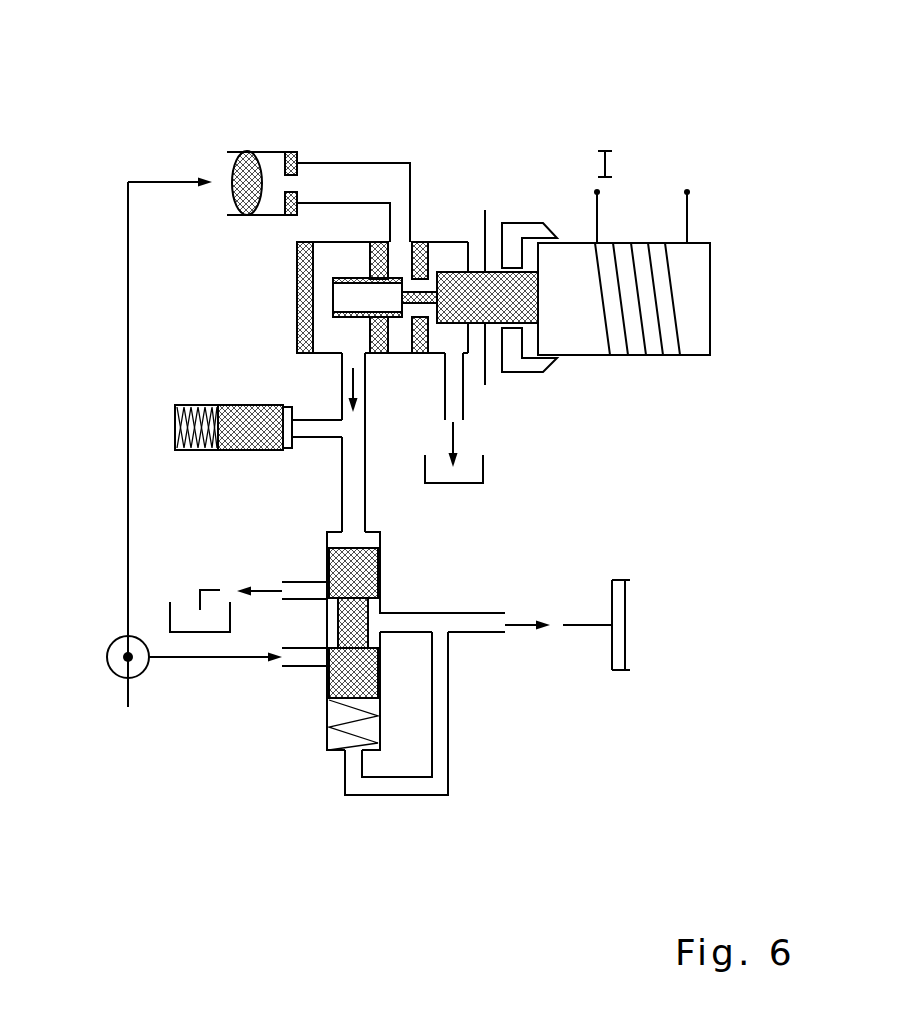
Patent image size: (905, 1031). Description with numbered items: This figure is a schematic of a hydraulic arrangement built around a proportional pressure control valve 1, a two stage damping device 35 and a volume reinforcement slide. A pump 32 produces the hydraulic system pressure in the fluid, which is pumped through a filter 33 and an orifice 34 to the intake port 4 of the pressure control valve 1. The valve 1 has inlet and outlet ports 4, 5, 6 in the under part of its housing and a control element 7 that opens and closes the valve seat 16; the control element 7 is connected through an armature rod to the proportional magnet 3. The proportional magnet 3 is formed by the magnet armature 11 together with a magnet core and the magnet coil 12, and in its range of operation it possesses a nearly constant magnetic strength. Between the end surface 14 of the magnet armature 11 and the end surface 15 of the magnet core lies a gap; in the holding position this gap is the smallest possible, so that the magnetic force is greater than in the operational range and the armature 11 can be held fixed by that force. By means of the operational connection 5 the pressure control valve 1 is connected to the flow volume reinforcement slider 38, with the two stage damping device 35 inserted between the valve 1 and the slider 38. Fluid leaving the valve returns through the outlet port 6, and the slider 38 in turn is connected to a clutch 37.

The pressure control valve 1 is at (552, 188).
The proportional magnet 3 is at (600, 370).
The intake port 4 is at (402, 237).
The operational connection 5 is at (340, 402).
The outlet port 6 is at (463, 387).
The control element 7 is at (342, 298).
The magnet armature 11 is at (693, 320).
The magnet coil 12 is at (672, 278).
The end surface of the magnet armature 14 is at (537, 258).
The end surface of the magnet core 15 is at (543, 363).
The valve seat 16 is at (422, 240).
The pump 32 is at (113, 640).
The filter 33 is at (232, 153).
The orifice 34 is at (292, 182).
The 2-stage damping device 35 is at (218, 438).
The clutch 37 is at (625, 626).
The flow volume reinforcement slider 38 is at (330, 680).